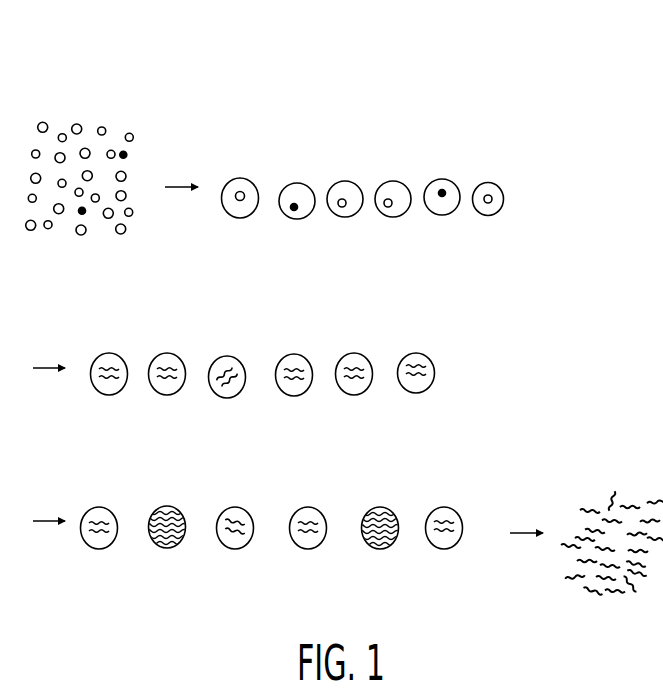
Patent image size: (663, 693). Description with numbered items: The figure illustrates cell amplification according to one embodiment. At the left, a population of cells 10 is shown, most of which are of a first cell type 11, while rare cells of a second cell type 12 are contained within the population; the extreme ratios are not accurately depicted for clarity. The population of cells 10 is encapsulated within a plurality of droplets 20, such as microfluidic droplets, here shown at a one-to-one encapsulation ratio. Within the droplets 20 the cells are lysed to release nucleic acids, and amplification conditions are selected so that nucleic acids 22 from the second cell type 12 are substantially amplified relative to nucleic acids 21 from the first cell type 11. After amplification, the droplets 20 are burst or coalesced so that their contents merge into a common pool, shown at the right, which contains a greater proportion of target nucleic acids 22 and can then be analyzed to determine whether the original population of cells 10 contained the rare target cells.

The population of cells 10 is at (110, 80).
The first cell type 11 is at (105, 128).
The second cell type 12 is at (127, 154).
The droplets 20 is at (255, 180).
The nucleic acids 21 is at (287, 393).
The nucleic acids 22 is at (163, 392).